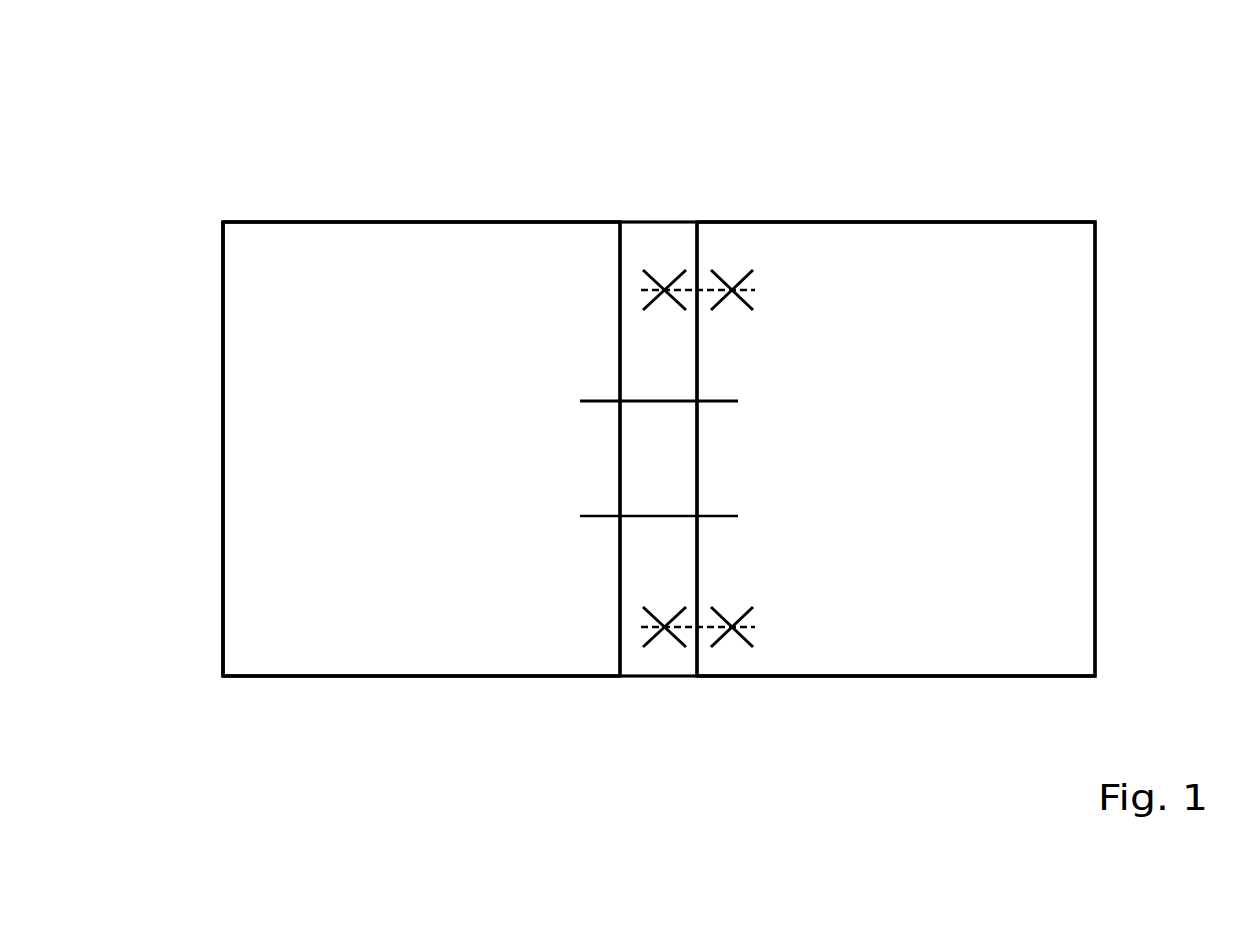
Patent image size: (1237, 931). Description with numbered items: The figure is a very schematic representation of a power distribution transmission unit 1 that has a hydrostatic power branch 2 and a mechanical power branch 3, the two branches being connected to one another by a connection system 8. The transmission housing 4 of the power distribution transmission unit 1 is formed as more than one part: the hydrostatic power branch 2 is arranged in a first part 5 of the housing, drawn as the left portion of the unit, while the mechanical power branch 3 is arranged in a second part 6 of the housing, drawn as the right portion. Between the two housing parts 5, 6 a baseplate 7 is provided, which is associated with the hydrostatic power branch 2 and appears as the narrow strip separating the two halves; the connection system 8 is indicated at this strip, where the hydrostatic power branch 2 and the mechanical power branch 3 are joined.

The power distribution transmission unit 1 is at (300, 188).
The hydrostatic power branch 2 is at (542, 212).
The mechanical power branch 3 is at (864, 210).
The transmission housing 4 is at (222, 300).
The first part of the housing 5 is at (450, 262).
The second part of the housing 6 is at (940, 253).
The baseplate 7 is at (684, 238).
The connection system 8 is at (663, 248).